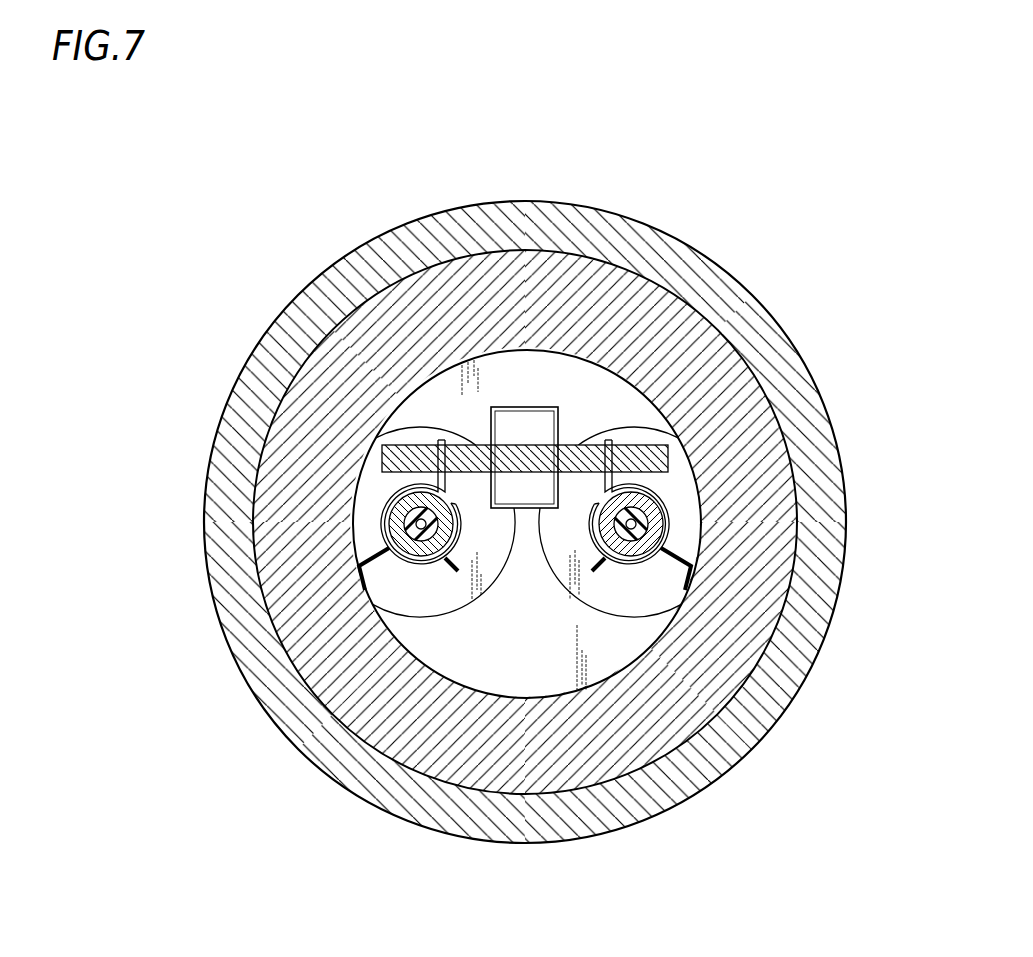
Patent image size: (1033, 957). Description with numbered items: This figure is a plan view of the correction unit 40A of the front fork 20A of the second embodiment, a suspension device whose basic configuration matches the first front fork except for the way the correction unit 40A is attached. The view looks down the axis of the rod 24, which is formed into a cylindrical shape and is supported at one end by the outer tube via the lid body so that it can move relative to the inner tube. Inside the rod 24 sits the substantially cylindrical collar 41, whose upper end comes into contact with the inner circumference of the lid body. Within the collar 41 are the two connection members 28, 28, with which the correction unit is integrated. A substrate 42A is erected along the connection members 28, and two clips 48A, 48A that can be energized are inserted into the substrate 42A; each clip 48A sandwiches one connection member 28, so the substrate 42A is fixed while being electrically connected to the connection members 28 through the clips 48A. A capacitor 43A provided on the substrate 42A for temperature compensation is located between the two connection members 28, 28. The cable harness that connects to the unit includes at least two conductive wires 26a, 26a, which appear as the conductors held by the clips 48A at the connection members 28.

The front fork 20A is at (212, 191).
The rod 24 is at (328, 272).
The collar 41 is at (396, 290).
The connection member 28 is at (553, 582).
The correction unit 40A is at (477, 147).
The substrate 42A is at (483, 443).
The capacitor 43A is at (523, 490).
The clip 48A is at (606, 442).
The conductive wire 26a is at (416, 537).